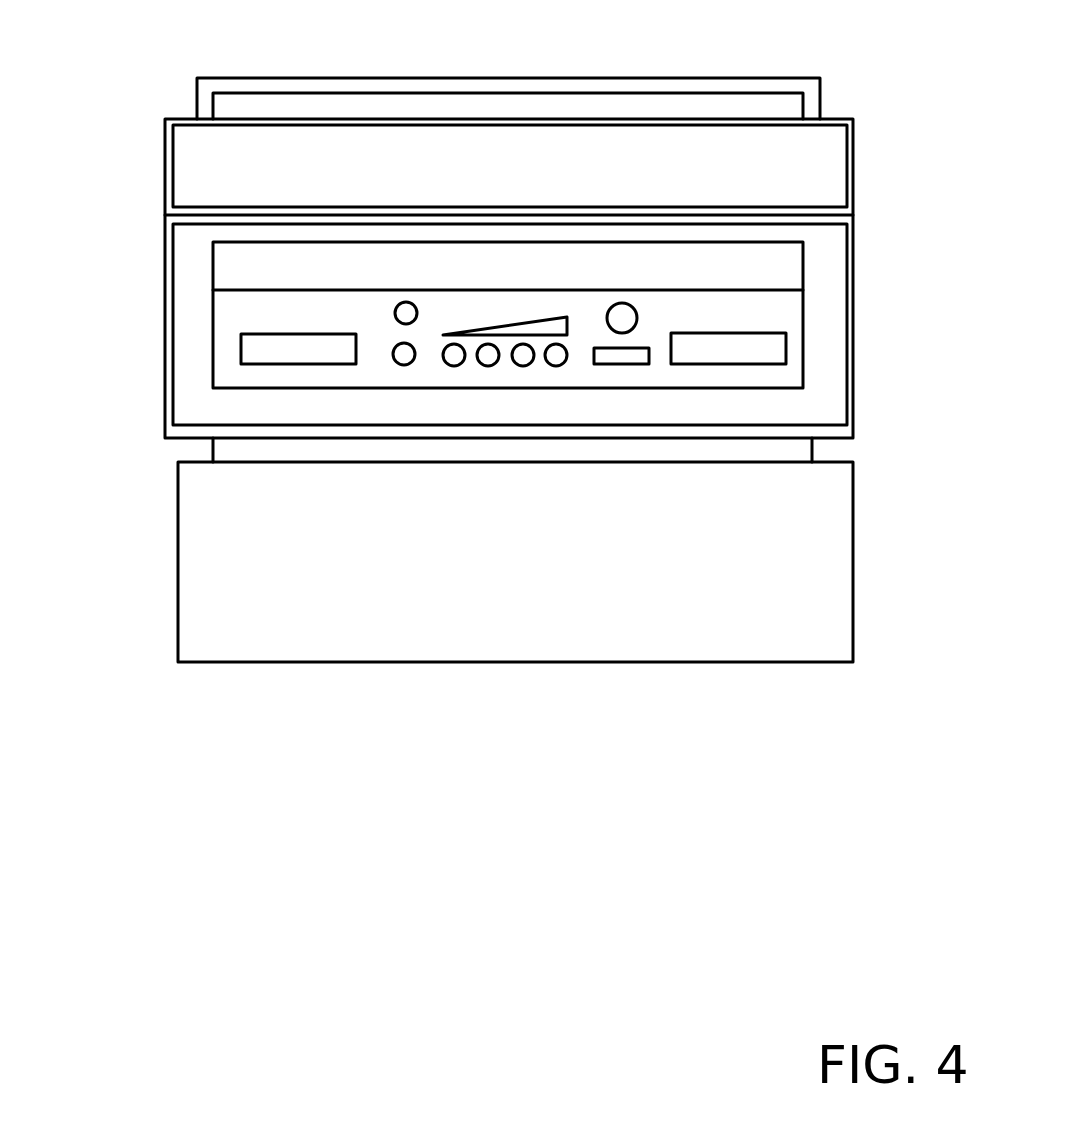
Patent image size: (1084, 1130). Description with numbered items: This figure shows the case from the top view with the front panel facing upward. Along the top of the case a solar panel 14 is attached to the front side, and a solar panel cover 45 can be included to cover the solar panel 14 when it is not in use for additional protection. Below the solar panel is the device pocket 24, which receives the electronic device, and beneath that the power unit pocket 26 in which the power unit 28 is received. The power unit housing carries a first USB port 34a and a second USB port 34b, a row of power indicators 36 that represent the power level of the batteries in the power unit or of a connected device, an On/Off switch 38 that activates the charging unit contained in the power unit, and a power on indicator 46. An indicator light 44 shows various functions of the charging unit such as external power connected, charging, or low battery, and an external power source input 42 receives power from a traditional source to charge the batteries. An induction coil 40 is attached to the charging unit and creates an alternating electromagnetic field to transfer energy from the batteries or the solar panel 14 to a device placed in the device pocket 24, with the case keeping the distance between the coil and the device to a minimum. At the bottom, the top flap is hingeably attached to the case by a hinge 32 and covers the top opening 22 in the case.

The solar panel 14 is at (803, 100).
The solar panel cover 45 is at (197, 95).
The device pocket 24 is at (827, 158).
The power unit pocket 26 is at (197, 379).
The induction coil 40 is at (806, 272).
The power unit 28 is at (213, 315).
The first USB port 34a is at (242, 347).
The second USB port 34b is at (770, 365).
The On/Off switch 38 is at (394, 315).
The power on indicator 46 is at (404, 366).
The power indicators 36 is at (573, 340).
The indicator light 44 is at (637, 318).
The external power source input 42 is at (622, 365).
The hinge 32 is at (213, 446).
The top opening 22 is at (178, 593).